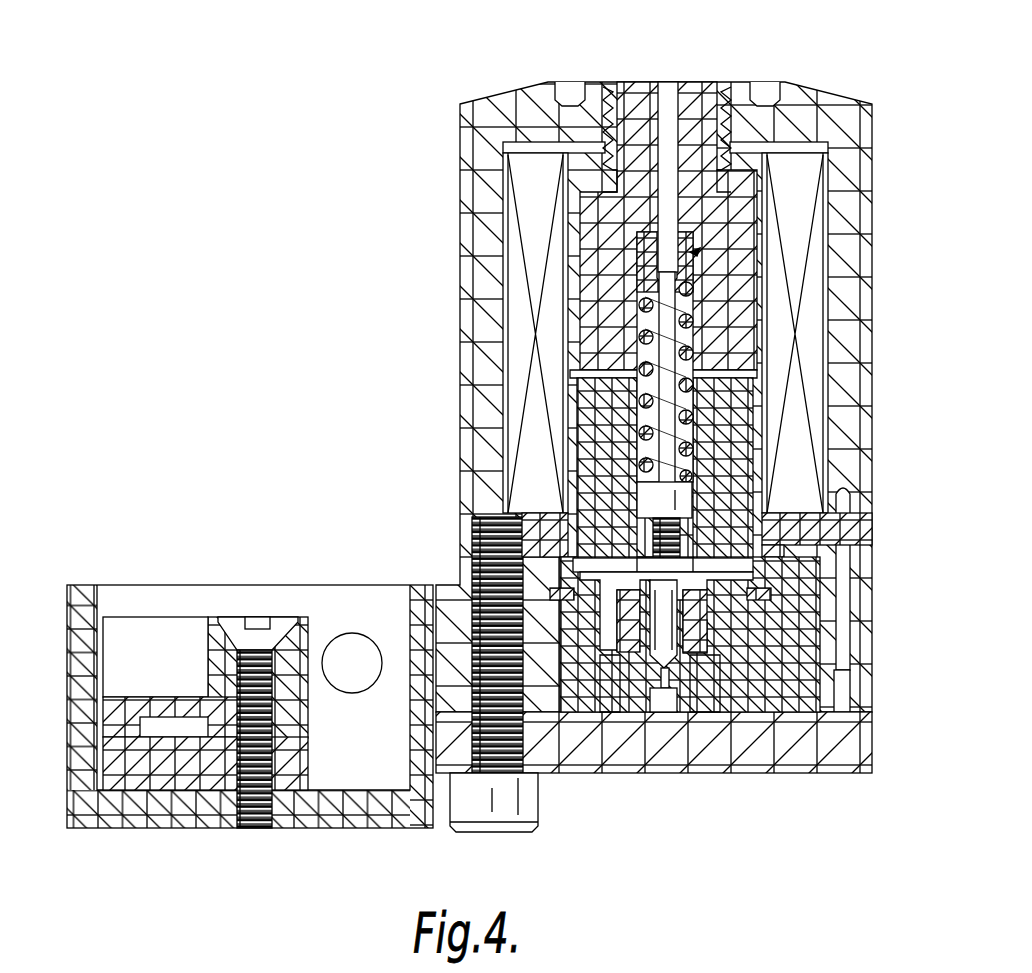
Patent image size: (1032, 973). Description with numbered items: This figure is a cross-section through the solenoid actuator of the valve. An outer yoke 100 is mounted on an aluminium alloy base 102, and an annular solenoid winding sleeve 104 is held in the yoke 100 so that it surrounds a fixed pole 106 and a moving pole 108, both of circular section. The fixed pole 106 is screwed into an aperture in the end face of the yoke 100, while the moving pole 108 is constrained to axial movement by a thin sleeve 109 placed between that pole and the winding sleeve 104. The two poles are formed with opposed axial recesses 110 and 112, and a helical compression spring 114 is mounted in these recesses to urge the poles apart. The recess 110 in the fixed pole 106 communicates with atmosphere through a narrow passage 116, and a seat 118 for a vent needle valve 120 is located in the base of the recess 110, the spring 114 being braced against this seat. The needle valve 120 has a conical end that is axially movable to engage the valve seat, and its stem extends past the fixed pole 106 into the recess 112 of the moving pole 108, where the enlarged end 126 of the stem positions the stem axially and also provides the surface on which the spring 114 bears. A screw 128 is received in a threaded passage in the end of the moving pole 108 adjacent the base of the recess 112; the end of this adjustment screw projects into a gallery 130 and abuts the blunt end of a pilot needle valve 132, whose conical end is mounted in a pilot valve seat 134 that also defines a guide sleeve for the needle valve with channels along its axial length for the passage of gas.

The outer yoke 100 is at (880, 125).
The aluminium alloy base 102 is at (432, 606).
The annular solenoid winding sleeve 104 is at (522, 332).
The fixed pole 106 is at (612, 285).
The moving pole 108 is at (603, 408).
The thin sleeve 109 is at (762, 298).
The axial recess 110 is at (695, 351).
The axial recess 112 is at (695, 410).
The helical compression spring 114 is at (695, 457).
The narrow passage 116 is at (667, 92).
The seat 118 is at (634, 238).
The vent needle valve 120 is at (700, 252).
The enlarged end of stem 126 is at (642, 497).
The screw 128 is at (765, 572).
The gallery 130 is at (745, 592).
The pilot needle valve 132 is at (650, 640).
The pilot valve seat 134 is at (702, 690).